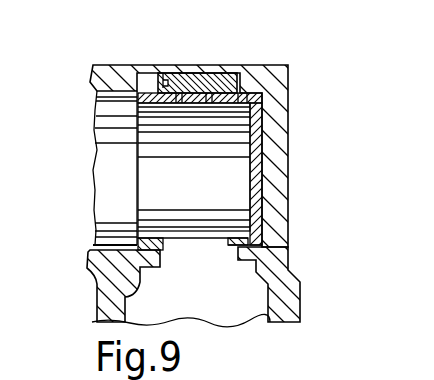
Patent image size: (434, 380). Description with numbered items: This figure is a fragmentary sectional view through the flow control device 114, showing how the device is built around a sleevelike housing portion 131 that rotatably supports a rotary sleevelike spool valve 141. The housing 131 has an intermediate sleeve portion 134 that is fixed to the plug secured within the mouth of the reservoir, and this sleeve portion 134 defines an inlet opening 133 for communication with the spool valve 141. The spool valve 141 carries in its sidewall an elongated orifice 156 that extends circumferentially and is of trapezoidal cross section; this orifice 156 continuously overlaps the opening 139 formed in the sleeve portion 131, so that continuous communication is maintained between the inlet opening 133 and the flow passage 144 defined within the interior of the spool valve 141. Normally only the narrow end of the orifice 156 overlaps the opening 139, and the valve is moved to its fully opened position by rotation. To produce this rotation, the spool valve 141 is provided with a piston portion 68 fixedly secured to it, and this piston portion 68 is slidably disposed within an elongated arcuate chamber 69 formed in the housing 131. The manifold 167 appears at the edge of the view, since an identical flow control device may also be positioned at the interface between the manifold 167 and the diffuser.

The flow control device 114 is at (288, 108).
The sleevelike housing portion 131 is at (262, 68).
The manifold 167 is at (107, 76).
The piston portion 68 is at (195, 79).
The elongated arcuate chamber 69 is at (157, 82).
The rotary sleevelike spool valve 141 is at (262, 158).
The flow passage 144 is at (200, 162).
The elongated orifice 156 is at (199, 239).
The opening 139 is at (160, 252).
The inlet opening 133 is at (275, 308).
The intermediate sleeve portion 134 is at (297, 302).